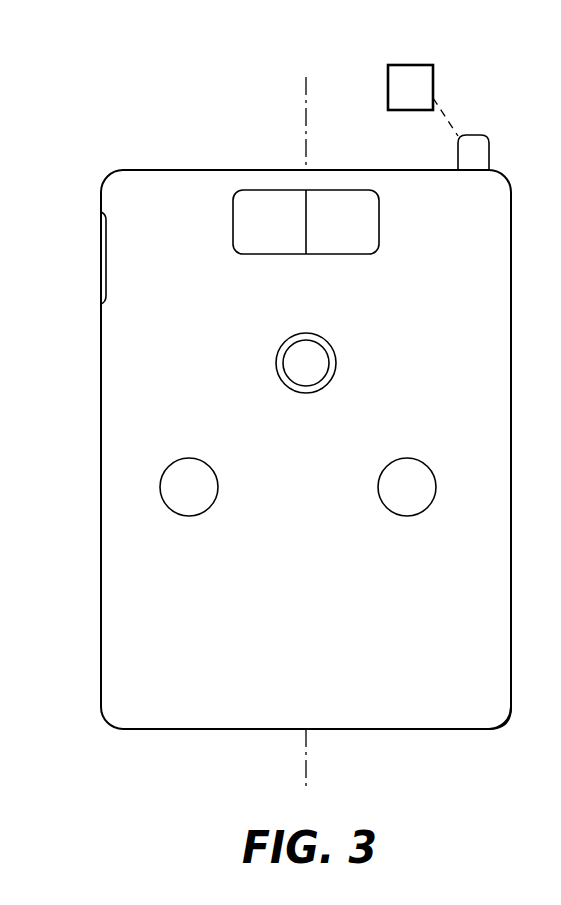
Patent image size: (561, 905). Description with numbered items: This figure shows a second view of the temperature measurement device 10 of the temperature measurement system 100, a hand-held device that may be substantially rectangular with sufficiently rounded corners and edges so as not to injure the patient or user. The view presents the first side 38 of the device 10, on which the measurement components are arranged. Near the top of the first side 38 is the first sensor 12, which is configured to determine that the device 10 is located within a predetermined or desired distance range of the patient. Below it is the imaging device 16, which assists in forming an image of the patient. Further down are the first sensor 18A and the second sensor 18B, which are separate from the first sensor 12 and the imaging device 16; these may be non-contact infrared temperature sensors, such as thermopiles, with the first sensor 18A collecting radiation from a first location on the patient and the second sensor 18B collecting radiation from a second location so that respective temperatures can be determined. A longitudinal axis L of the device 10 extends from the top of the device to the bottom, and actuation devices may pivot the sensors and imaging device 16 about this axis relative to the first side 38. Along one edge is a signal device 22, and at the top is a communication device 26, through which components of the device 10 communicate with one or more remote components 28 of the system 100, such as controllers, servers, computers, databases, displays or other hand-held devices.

The temperature measurement system 100 is at (84, 96).
The temperature measurement device 10 is at (99, 756).
The first sensor 12 is at (379, 216).
The imaging device 16 is at (333, 349).
The first sensor (additional sensor) 18A is at (211, 466).
The second sensor (additional sensor) 18B is at (428, 466).
The signal device 22 is at (100, 254).
The communication device 26 is at (490, 146).
The remote component 28 is at (421, 98).
The first side 38 is at (480, 706).
The longitudinal axis L is at (308, 776).